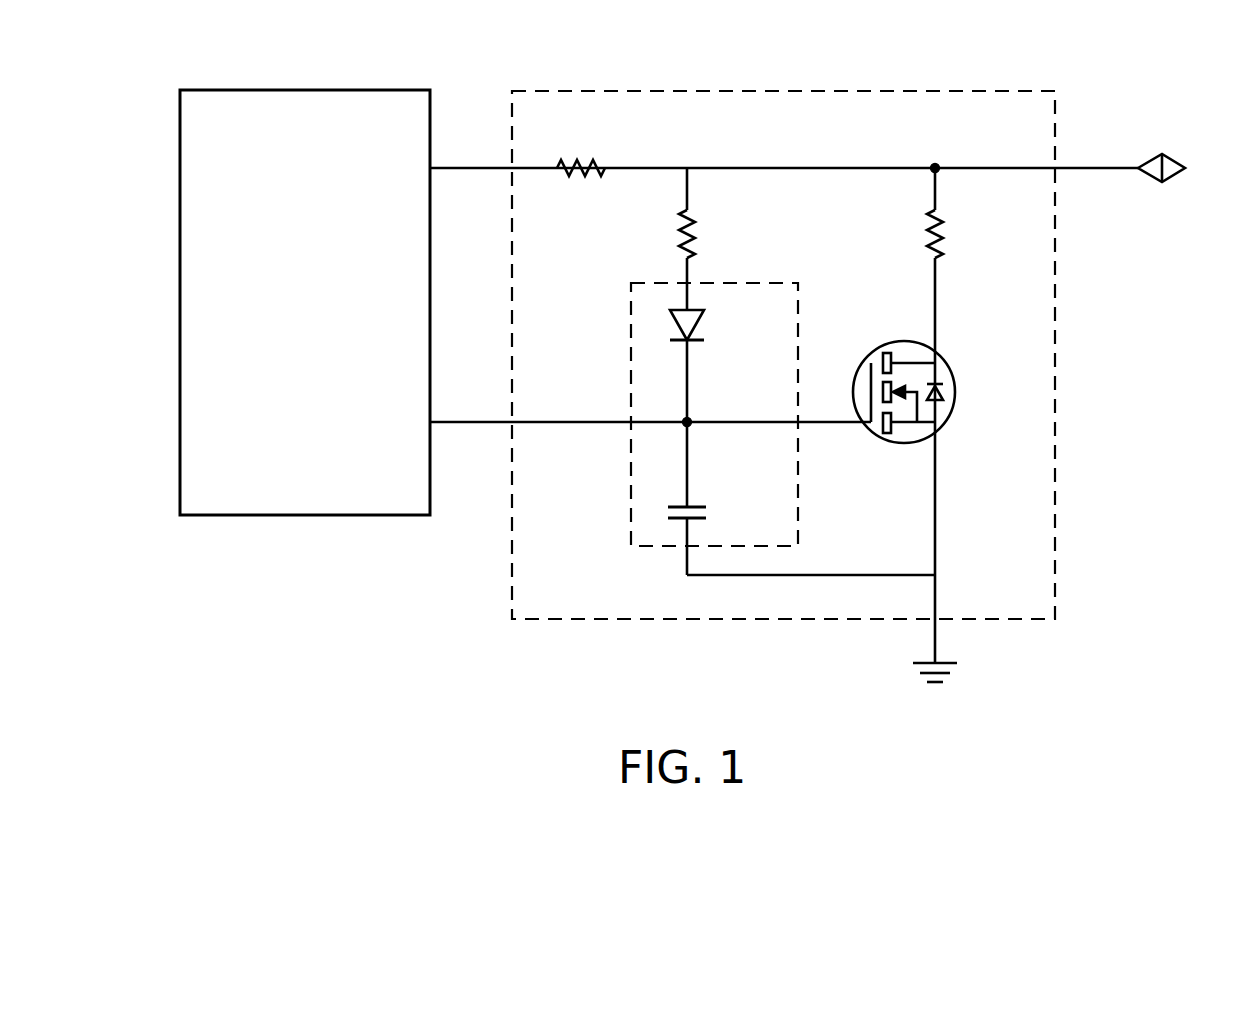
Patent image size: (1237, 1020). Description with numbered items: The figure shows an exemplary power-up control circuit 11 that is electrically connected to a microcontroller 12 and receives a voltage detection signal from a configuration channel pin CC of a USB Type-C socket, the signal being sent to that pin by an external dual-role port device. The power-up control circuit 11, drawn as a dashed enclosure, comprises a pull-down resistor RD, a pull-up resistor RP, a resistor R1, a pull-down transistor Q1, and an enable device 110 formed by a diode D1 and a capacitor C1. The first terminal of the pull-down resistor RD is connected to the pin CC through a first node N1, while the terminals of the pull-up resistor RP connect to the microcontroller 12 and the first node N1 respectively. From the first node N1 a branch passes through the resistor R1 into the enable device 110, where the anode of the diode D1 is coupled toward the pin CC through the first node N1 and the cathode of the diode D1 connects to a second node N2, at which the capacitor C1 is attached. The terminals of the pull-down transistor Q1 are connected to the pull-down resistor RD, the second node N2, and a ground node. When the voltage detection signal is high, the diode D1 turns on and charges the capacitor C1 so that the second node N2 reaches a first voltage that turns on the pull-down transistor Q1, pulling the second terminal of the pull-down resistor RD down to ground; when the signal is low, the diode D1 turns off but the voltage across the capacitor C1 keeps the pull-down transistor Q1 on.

The microcontroller 12 is at (320, 316).
The power-up control circuit 11 is at (1057, 325).
The enable device 110 is at (800, 513).
The pull-up resistor RP is at (581, 180).
The resistor R1 is at (696, 237).
The pull-down resistor RD is at (945, 237).
The diode D1 is at (698, 325).
The capacitor C1 is at (708, 513).
The pull-down transistor Q1 is at (958, 392).
The first node N1 is at (940, 164).
The second node N2 is at (692, 428).
The configuration channel pin CC is at (1173, 156).